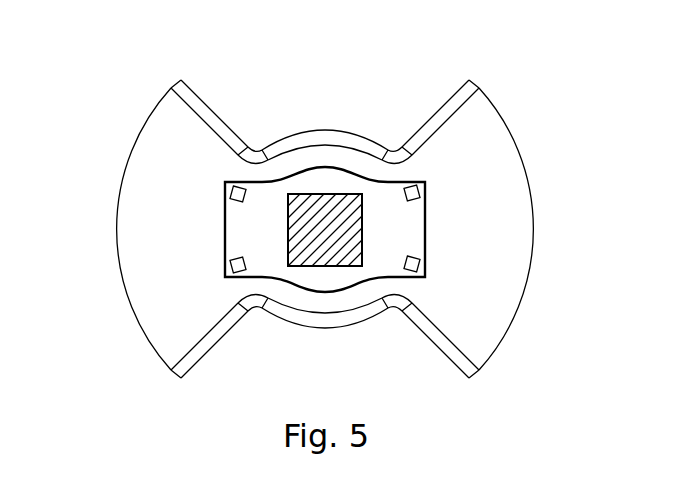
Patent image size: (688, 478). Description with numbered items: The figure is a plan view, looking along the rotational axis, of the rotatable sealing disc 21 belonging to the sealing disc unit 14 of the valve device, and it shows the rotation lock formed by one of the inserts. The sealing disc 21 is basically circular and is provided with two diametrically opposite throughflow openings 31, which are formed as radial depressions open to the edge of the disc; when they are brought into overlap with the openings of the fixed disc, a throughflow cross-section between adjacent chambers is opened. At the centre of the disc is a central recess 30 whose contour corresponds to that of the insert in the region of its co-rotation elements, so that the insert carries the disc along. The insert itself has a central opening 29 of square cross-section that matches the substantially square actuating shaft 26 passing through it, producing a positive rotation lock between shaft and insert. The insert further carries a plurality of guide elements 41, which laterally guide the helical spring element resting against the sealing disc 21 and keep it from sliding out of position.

The sealing disc unit 14 is at (318, 233).
The rotatable sealing disc 21 is at (493, 138).
The actuating shaft 26 is at (325, 228).
The central opening 29 is at (343, 194).
The central recess 30 is at (265, 182).
The throughflow opening 31 is at (430, 113).
The guide element 41 is at (231, 189).